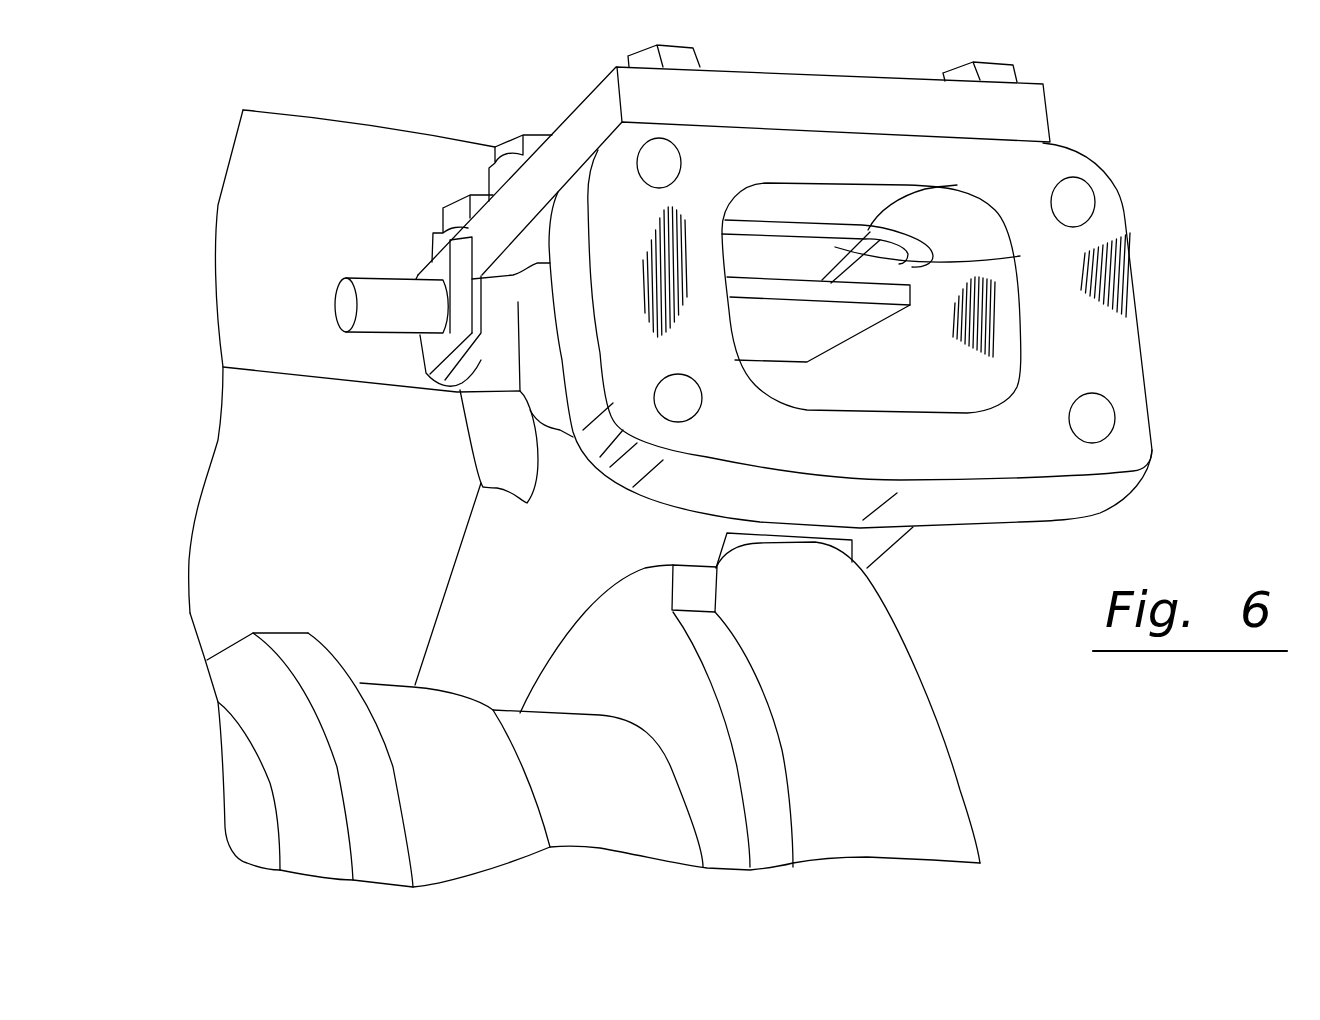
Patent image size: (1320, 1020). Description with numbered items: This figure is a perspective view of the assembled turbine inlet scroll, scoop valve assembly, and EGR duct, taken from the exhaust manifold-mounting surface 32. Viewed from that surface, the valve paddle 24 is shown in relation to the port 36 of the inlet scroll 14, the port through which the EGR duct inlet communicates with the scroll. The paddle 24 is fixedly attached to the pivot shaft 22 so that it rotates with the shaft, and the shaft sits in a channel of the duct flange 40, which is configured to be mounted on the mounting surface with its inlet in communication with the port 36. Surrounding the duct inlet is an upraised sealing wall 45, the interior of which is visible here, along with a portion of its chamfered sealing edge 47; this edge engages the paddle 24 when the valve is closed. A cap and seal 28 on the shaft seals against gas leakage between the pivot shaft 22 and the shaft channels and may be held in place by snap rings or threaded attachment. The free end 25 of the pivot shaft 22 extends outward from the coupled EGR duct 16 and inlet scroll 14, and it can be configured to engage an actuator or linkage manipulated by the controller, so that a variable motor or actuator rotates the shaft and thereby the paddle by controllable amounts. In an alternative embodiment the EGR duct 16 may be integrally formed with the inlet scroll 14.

The inlet scroll 14 is at (943, 714).
The EGR duct 16 is at (360, 123).
The pivot shaft 22 is at (357, 262).
The paddle 24 is at (784, 348).
The free end 25 is at (346, 302).
The cap and seal 28 is at (432, 258).
The exhaust manifold-mounting surface 32 is at (1085, 338).
The port 36 is at (781, 248).
The duct flange 40 is at (589, 88).
The sealing wall 45 is at (1020, 256).
The chamfered sealing edge 47 is at (953, 184).